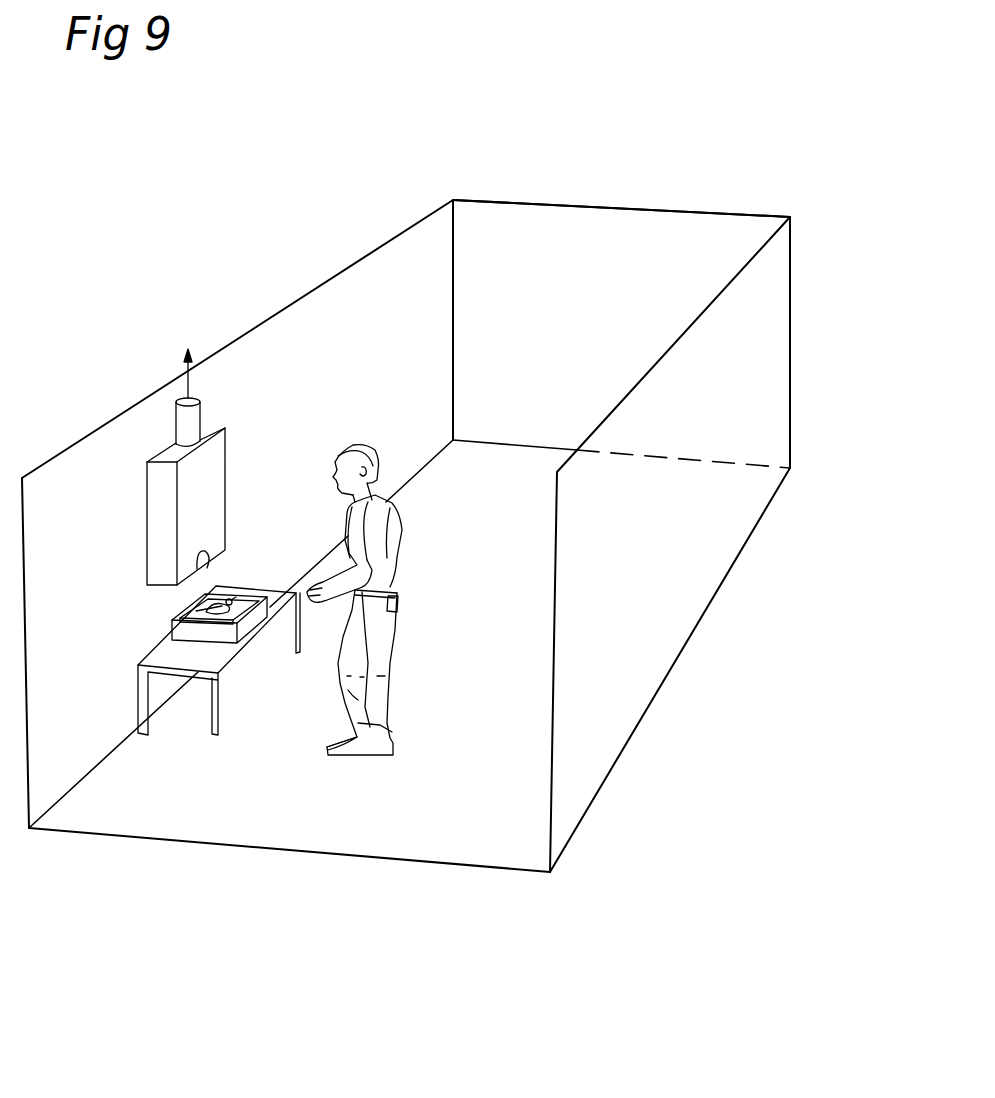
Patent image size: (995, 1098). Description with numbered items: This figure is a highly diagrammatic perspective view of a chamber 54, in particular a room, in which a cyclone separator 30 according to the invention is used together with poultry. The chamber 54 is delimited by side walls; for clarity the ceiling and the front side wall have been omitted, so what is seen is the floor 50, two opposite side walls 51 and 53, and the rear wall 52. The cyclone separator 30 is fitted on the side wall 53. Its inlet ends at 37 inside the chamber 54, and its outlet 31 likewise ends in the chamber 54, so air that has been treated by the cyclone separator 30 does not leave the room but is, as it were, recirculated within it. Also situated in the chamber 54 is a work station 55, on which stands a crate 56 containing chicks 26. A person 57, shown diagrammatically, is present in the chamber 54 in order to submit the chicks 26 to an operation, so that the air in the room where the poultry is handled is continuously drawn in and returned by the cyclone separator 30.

The chicks 26 is at (240, 598).
The cyclone separator 30 is at (184, 467).
The outlet 31 is at (192, 418).
The inlet end 37 is at (210, 566).
The floor 50 is at (343, 860).
The side wall 51 is at (655, 643).
The rear wall 52 is at (638, 208).
The side wall 53 is at (267, 318).
The chamber 54 is at (523, 293).
The work station 55 is at (172, 675).
The crate 56 is at (204, 597).
The person 57 is at (393, 559).